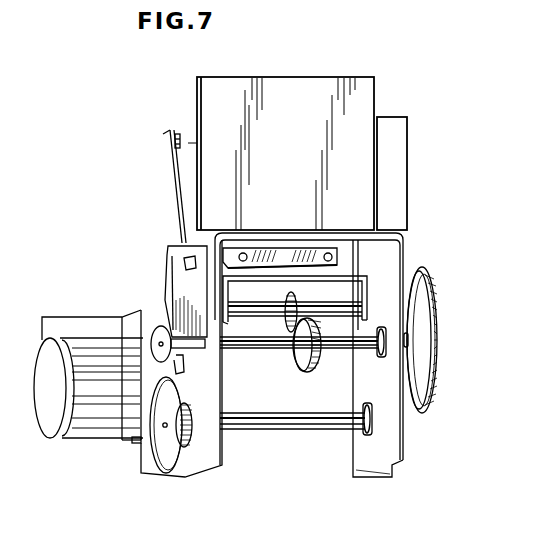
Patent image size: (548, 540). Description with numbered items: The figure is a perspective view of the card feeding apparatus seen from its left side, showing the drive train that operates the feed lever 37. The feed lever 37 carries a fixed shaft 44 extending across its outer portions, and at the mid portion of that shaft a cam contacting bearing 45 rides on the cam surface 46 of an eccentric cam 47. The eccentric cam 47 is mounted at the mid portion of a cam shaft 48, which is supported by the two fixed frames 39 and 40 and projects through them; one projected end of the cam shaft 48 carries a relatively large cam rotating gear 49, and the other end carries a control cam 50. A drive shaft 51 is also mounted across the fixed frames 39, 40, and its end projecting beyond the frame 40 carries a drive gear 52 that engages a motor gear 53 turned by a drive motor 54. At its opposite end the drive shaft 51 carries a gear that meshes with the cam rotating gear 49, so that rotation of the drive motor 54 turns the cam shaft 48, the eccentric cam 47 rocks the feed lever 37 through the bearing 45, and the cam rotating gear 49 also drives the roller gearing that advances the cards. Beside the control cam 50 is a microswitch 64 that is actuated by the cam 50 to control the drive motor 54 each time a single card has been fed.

The feed lever 37 is at (331, 341).
The fixed frame 39 is at (406, 358).
The fixed frame 40 is at (181, 375).
The fixed shaft 44 is at (312, 304).
The cam contacting bearing 45 is at (309, 273).
The cam surface 46 is at (317, 360).
The eccentric cam 47 is at (299, 370).
The cam shaft 48 is at (372, 361).
The cam rotating gear 49 is at (445, 340).
The control cam 50 is at (165, 310).
The drive shaft 51 is at (296, 446).
The drive gear 52 is at (168, 445).
The motor gear 53 is at (123, 403).
The drive motor 54 is at (88, 403).
The microswitch 64 is at (158, 193).